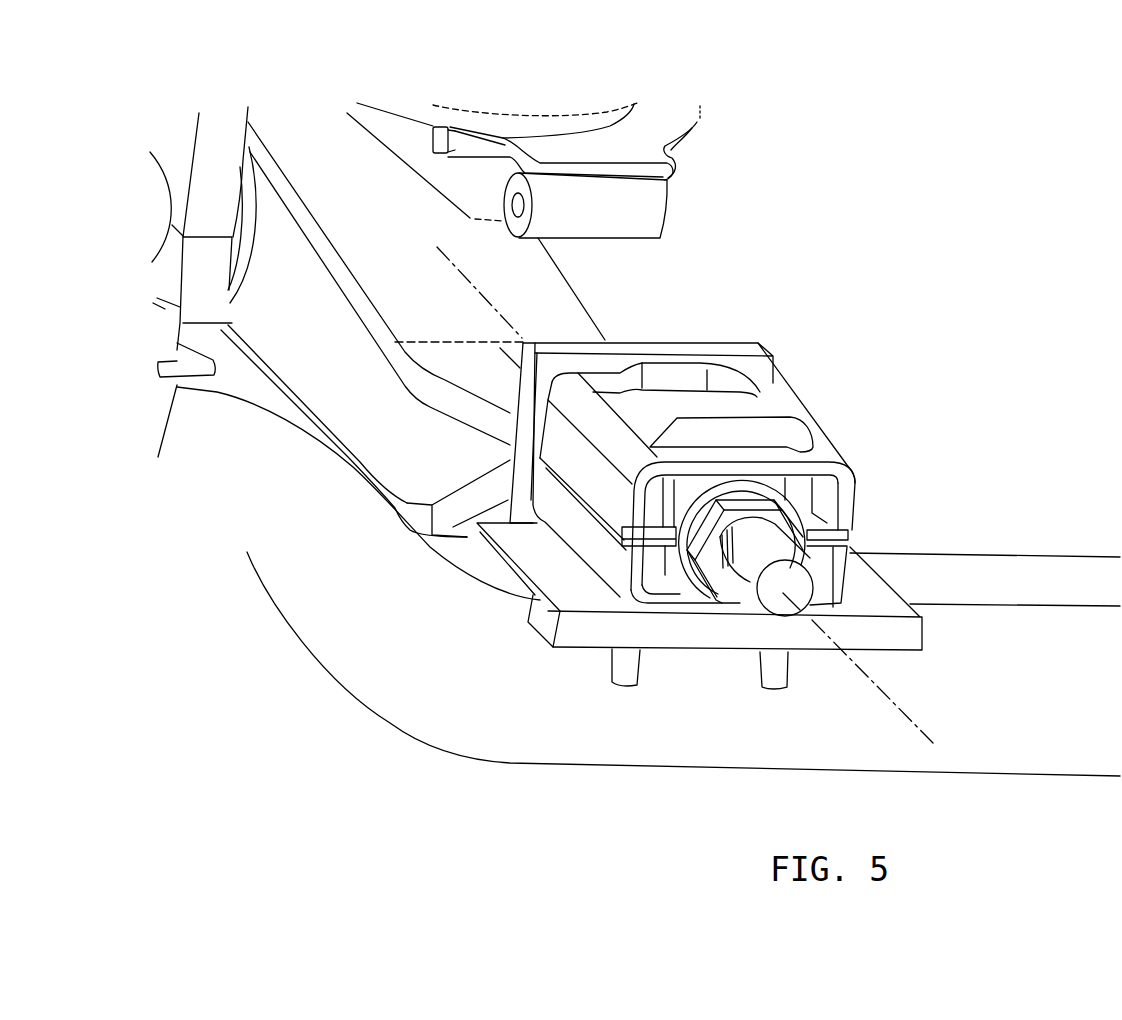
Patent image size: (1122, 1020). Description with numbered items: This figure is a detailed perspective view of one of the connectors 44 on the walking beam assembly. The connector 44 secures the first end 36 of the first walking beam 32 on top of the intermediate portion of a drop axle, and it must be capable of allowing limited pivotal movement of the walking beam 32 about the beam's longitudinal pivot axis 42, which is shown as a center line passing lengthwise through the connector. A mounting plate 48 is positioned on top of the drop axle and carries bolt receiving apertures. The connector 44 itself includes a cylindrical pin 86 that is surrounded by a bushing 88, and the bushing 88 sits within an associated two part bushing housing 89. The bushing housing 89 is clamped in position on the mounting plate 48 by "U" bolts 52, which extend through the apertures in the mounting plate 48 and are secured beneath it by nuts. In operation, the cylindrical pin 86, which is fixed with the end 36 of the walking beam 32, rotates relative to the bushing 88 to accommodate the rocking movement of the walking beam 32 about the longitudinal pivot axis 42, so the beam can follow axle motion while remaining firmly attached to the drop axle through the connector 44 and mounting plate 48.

The first walking beam 32 is at (577, 297).
The first end 36 is at (487, 483).
The longitudinal pivot axis 42 is at (930, 712).
The connector 44 is at (856, 404).
The mounting plate 48 is at (533, 597).
The U bolt 52 is at (755, 427).
The cylindrical pin 86 is at (750, 585).
The bushing 88 is at (674, 520).
The two part bushing housing 89 is at (855, 492).